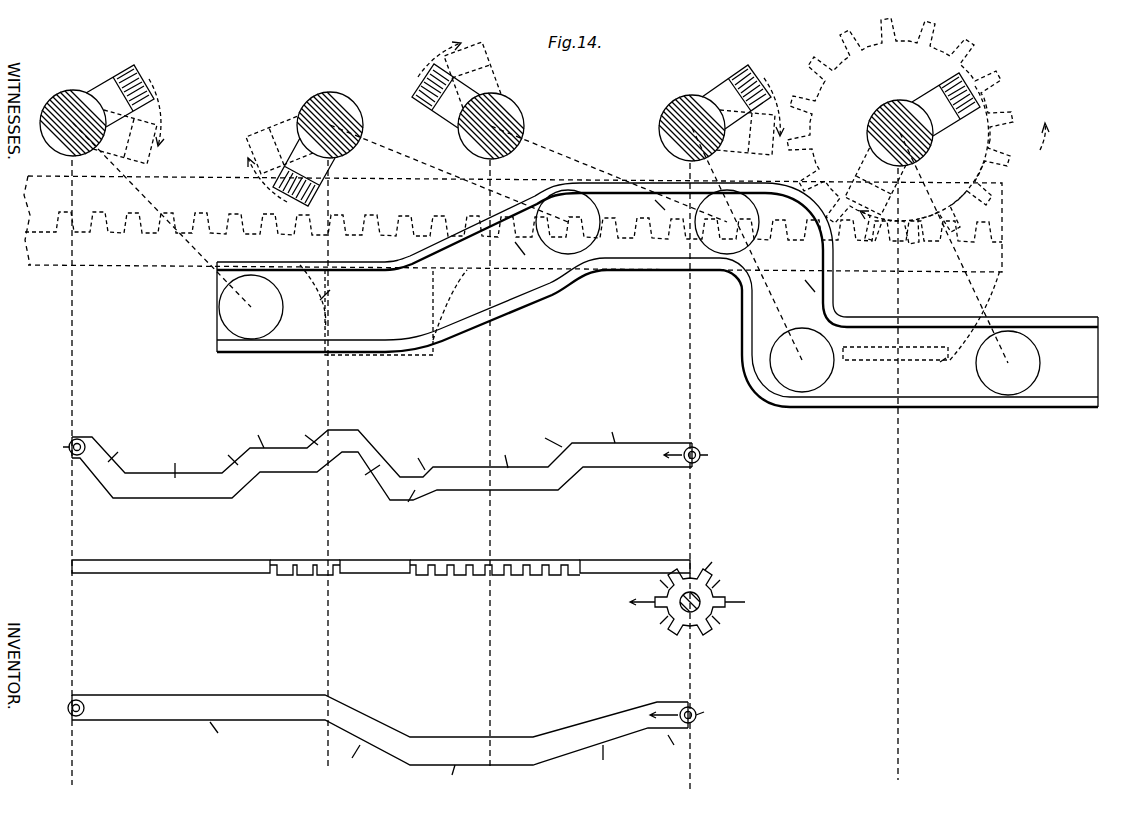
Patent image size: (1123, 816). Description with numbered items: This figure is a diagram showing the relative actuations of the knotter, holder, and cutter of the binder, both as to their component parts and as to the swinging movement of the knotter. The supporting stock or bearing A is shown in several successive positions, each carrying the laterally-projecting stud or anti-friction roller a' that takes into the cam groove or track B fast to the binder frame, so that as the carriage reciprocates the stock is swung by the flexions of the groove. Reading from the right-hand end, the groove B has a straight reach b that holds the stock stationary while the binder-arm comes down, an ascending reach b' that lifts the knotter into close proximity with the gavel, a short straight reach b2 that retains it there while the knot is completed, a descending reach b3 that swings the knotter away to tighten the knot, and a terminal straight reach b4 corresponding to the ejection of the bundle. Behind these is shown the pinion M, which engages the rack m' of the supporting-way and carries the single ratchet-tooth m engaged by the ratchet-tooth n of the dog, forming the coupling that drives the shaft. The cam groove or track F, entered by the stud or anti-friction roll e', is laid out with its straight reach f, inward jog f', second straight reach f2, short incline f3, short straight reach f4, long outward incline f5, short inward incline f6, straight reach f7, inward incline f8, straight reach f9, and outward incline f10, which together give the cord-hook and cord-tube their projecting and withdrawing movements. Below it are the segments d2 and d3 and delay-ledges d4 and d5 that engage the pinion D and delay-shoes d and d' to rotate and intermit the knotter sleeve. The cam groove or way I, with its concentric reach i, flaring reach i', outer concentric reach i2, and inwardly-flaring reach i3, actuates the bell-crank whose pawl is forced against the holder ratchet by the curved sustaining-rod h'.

The supporting stock or bearing A is at (486, 128).
The ratchet-tooth of dog n is at (145, 72).
The ratchet-tooth of pinion m is at (541, 131).
The pinion M is at (900, 131).
The rack m' is at (513, 224).
The cam groove or track B is at (217, 330).
The stud or anti-friction roller a' is at (629, 292).
The straight reach b is at (947, 371).
The ascending reach b' is at (800, 288).
The short straight reach b2 is at (650, 200).
The descending reach b3 is at (511, 248).
The straight reach b4 is at (314, 304).
The cam groove or track F is at (384, 477).
The stud or anti-friction roll e' is at (381, 452).
The straight reach f is at (609, 428).
The inward jog or reach f' is at (549, 436).
The second straight reach f2 is at (504, 452).
The short inward jog or incline f3 is at (417, 455).
The short straight reach f4 is at (410, 505).
The long outward incline f5 is at (360, 479).
The short inward incline f6 is at (302, 429).
The straight reach f7 is at (255, 430).
The inward incline f8 is at (223, 448).
The straight reach f9 is at (174, 462).
The outward incline f10 is at (124, 444).
The pinion D is at (687, 598).
The delay-shoe d is at (716, 564).
The delay-shoe d' is at (672, 616).
The segment d2 is at (495, 577).
The segment d3 is at (305, 577).
The delay-ledge d4 is at (210, 574).
The delay-ledge d5 is at (375, 577).
The cam groove or way I is at (382, 718).
The concentric reach i is at (442, 741).
The flaring reach i' is at (609, 755).
The outer concentric reach i2 is at (460, 777).
The inwardly-flaring reach i3 is at (354, 761).
The curved sustaining-rod h' is at (707, 710).